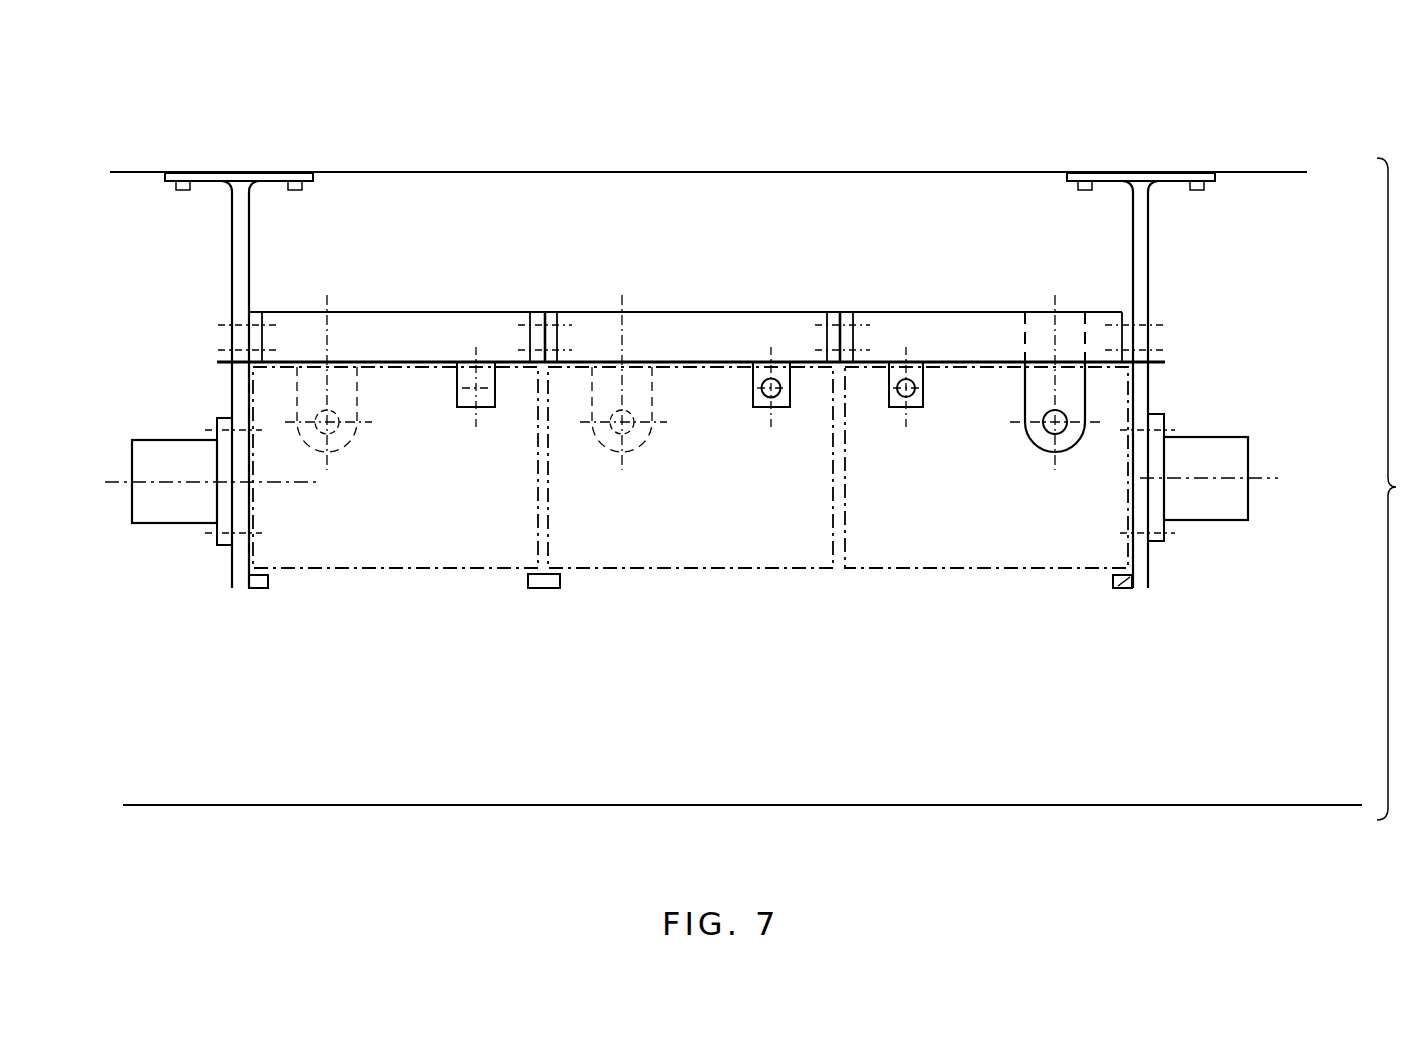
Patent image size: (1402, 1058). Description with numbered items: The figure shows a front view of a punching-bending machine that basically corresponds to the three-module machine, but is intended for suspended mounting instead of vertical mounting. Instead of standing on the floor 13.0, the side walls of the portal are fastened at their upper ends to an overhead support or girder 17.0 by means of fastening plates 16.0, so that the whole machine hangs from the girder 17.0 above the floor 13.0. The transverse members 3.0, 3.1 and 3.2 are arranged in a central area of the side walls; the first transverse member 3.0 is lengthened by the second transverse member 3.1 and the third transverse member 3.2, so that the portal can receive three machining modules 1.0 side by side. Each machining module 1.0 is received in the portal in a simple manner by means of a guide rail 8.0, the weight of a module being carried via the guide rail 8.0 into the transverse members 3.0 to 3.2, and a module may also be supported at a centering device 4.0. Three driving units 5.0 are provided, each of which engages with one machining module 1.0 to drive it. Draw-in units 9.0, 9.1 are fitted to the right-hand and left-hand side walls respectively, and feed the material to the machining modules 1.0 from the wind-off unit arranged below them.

The machining module 1.0 is at (382, 544).
The transverse member 3.0 is at (970, 322).
The transverse member 3.1 is at (727, 322).
The transverse member 3.2 is at (415, 322).
The centering device 4.0 is at (902, 395).
The driving unit 5.0 is at (340, 440).
The guide rail 8.0 is at (265, 590).
The draw-in unit 9.0 is at (1190, 452).
The draw-in unit 9.1 is at (182, 455).
The floor 13.0 is at (1008, 805).
The fastening plate 16.0 is at (300, 175).
The support or girder 17.0 is at (745, 155).